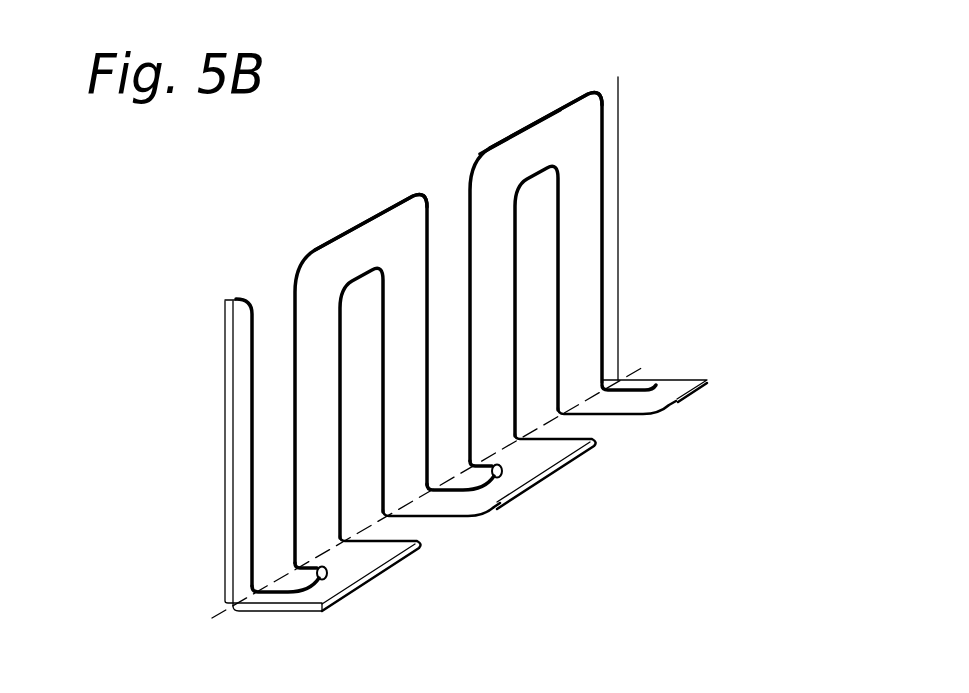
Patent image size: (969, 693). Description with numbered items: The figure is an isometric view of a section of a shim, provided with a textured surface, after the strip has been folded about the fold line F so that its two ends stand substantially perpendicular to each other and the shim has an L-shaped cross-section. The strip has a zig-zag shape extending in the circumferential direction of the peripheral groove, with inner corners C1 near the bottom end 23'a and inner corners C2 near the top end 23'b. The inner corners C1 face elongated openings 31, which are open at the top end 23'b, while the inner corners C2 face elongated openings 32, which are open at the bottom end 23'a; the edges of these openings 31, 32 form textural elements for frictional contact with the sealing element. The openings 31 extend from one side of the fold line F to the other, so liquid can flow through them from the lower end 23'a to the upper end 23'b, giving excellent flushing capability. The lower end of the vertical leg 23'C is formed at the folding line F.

The vertical leg 23'C is at (206, 455).
The elongated openings 31 is at (267, 323).
The inner corners C2 is at (362, 270).
The top end 23'b is at (493, 83).
The elongated openings 32 is at (413, 527).
The bottom end 23'a is at (611, 296).
The inner corners C1 is at (326, 566).
The fold line F is at (630, 373).